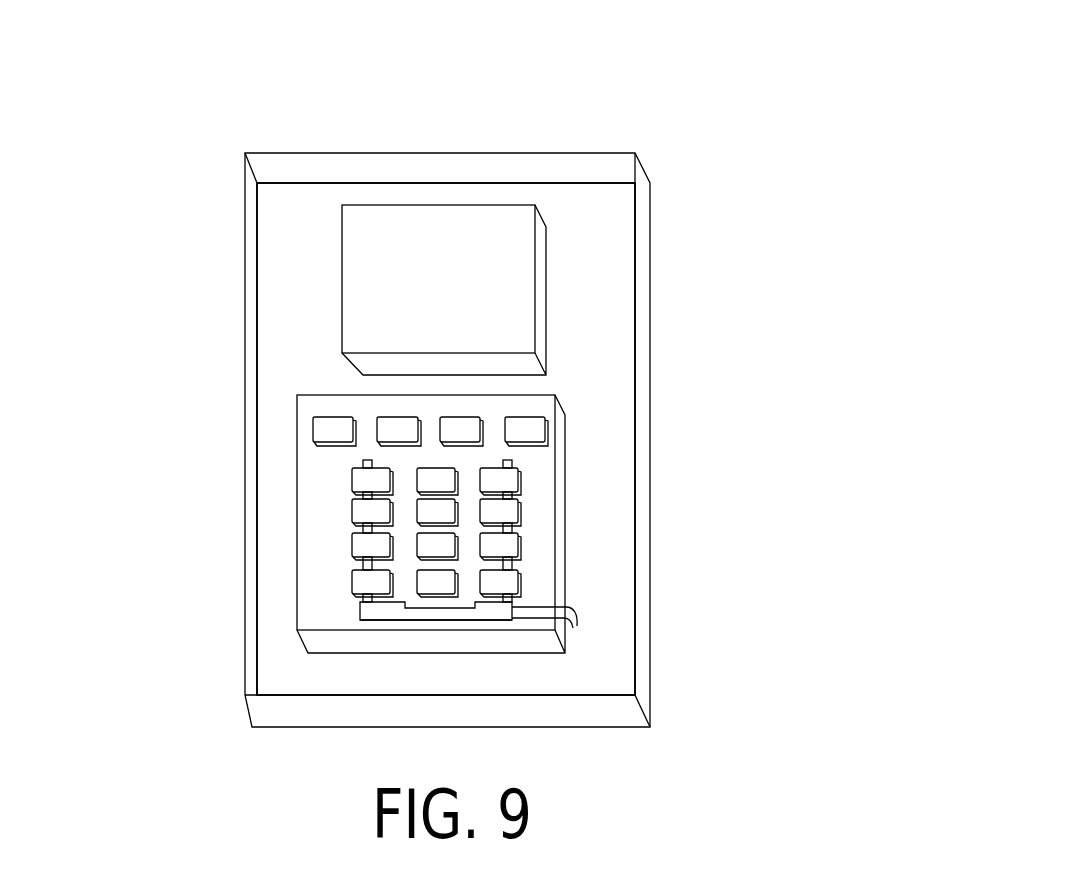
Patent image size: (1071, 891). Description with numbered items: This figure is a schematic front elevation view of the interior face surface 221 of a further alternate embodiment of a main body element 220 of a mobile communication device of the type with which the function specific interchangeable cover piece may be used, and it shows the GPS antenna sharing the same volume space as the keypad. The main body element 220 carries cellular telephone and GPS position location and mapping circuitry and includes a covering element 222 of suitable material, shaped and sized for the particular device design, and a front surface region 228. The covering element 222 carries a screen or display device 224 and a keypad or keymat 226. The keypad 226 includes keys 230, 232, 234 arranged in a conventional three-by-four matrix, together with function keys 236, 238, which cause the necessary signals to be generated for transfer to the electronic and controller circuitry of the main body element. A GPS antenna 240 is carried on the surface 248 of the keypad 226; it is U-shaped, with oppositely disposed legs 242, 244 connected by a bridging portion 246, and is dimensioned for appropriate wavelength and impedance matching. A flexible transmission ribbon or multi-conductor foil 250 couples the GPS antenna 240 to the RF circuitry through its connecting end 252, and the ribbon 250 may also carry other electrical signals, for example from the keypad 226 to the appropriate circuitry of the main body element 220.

The main body element 220 is at (543, 103).
The interior face surface 221 is at (613, 314).
The covering element 222 is at (627, 152).
The display device 224 is at (532, 255).
The keypad 226 is at (555, 398).
The housing front surface 228 is at (270, 315).
The key 230 is at (510, 480).
The key 232 is at (510, 513).
The key 234 is at (347, 507).
The function key 236 is at (318, 425).
The function key 238 is at (548, 424).
The GPS antenna 240 is at (357, 604).
The leg 242 is at (363, 460).
The leg 244 is at (513, 457).
The bridging portion 246 is at (432, 615).
The surface of the keypad 248 is at (347, 568).
The flexible transmission ribbon 250 is at (532, 607).
The connecting end 252 is at (565, 612).